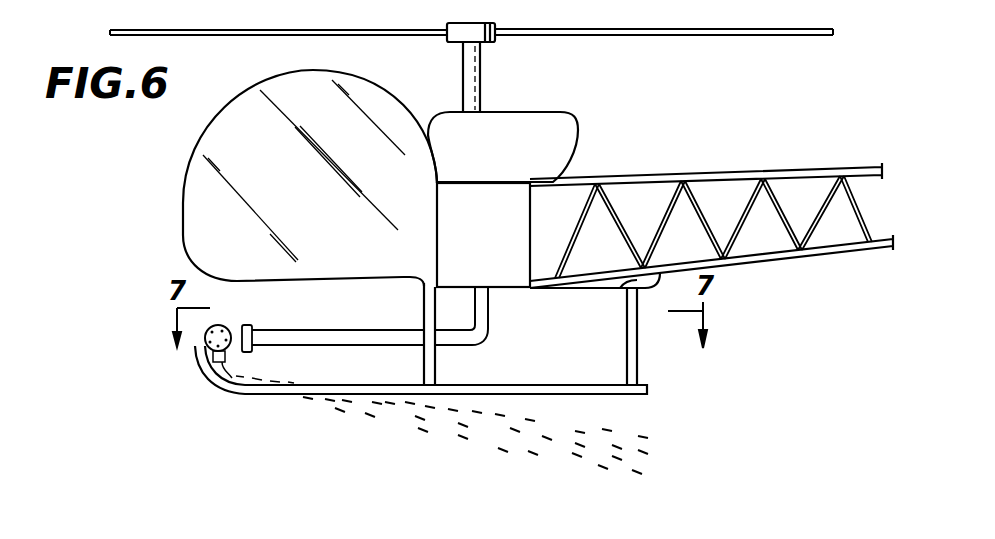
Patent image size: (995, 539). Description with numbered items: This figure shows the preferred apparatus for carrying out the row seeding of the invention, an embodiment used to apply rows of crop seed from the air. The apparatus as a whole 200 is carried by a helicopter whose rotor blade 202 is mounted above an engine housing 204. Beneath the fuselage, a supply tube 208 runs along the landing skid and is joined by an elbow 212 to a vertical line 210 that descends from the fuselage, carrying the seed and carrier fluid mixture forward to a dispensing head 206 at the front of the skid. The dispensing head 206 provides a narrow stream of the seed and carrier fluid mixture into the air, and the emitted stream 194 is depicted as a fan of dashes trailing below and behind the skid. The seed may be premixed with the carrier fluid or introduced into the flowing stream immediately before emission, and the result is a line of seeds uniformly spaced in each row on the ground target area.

The spray 194 is at (455, 433).
The spray boom assembly 200 is at (310, 358).
The rotor blade 202 is at (565, 34).
The engine housing 204 is at (482, 193).
The dispensing head 206 is at (227, 328).
The supply tube 208 is at (303, 332).
The vertical supply line 210 is at (489, 310).
The elbow 212 is at (472, 338).